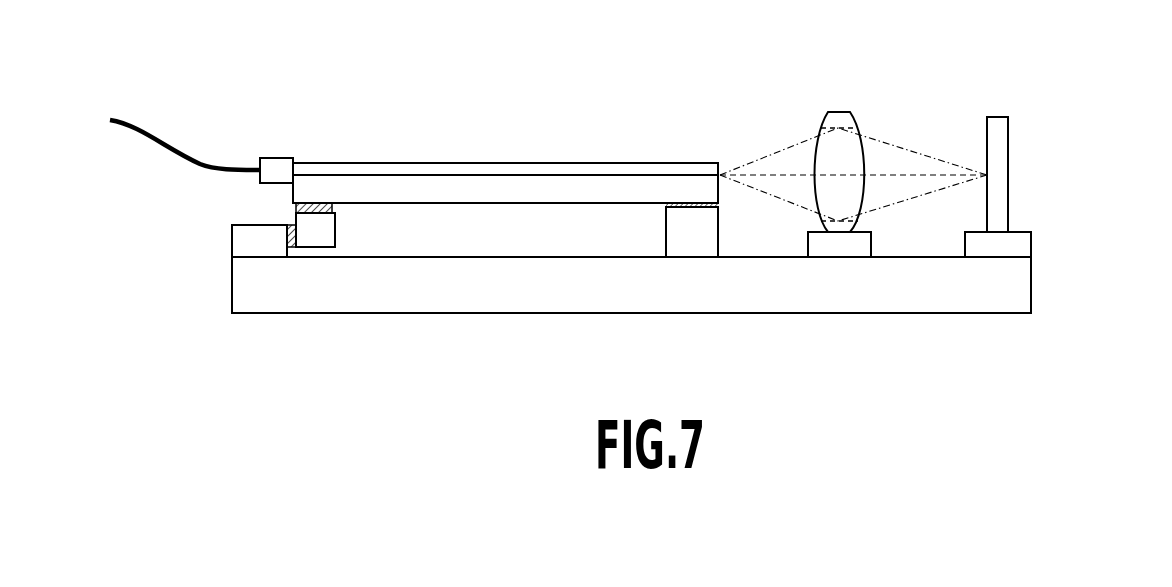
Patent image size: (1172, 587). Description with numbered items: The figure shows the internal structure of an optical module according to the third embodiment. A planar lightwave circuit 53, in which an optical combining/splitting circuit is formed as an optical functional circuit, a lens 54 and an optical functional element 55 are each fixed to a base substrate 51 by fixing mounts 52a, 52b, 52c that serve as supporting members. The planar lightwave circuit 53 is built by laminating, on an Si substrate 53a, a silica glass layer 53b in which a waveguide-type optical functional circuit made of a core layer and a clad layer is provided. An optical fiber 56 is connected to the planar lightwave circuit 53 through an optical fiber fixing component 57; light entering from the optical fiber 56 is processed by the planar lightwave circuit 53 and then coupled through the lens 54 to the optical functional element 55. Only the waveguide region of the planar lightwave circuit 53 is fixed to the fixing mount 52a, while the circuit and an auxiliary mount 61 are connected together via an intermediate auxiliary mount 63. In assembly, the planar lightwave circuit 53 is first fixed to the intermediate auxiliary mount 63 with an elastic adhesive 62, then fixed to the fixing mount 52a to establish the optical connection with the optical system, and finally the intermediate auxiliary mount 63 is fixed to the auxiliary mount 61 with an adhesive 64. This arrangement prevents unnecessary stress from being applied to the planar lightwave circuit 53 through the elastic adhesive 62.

The base substrate 51 is at (1018, 282).
The fixing mount 52a is at (693, 235).
The fixing mount 52b is at (840, 248).
The fixing mount 52c is at (1023, 248).
The planar lightwave circuit 53 is at (527, 215).
The Si substrate 53a is at (415, 192).
The silica glass layer 53b is at (650, 163).
The lens 54 is at (840, 112).
The optical functional element 55 is at (1000, 117).
The optical fiber 56 is at (175, 143).
The optical fiber fixing component 57 is at (283, 157).
The auxiliary mount 61 is at (242, 240).
The elastic adhesive 62 is at (298, 200).
The intermediate auxiliary mount 63 is at (322, 232).
The adhesive 64 is at (287, 249).